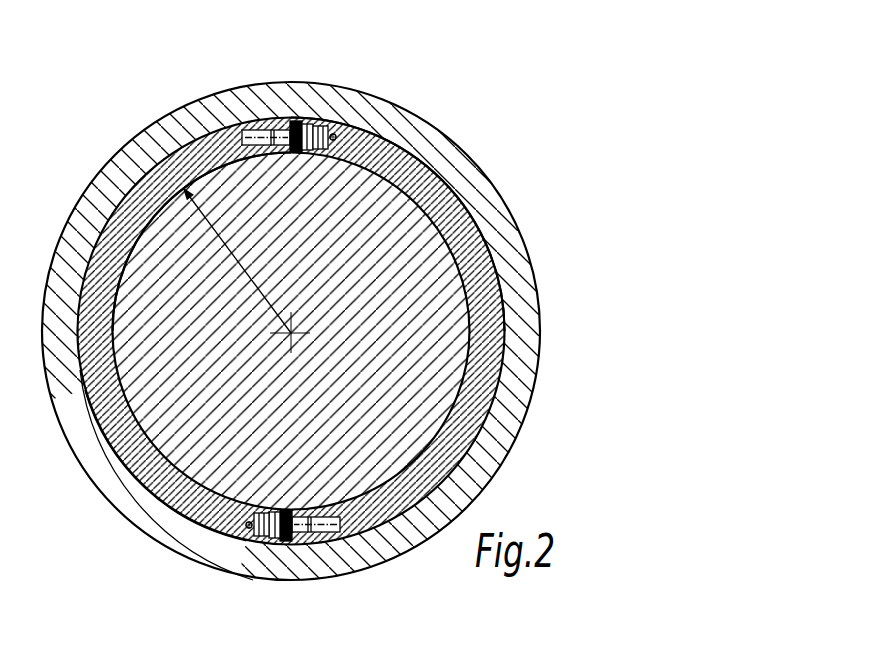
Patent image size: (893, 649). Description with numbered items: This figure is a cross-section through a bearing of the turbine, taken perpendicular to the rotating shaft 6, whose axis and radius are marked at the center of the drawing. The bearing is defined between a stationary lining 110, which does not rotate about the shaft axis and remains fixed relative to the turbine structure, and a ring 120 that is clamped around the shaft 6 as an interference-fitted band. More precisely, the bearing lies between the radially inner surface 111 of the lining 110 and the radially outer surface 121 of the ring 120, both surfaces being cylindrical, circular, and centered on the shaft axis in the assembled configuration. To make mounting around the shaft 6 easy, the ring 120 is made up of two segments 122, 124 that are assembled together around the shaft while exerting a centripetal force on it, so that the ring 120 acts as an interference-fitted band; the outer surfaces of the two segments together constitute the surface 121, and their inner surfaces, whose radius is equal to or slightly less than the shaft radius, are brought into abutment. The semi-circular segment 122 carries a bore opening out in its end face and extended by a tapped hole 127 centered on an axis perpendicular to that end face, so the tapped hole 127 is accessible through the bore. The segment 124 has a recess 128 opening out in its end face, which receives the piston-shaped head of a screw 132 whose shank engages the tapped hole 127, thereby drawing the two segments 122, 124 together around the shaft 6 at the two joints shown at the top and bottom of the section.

The shaft 6 is at (432, 357).
The stationary lining 110 is at (448, 155).
The radially inner surface of the lining 111 is at (140, 470).
The ring 120 is at (503, 10).
The radially outer surface of the ring 121 is at (100, 440).
The segment 122 is at (360, 148).
The segment 124 is at (223, 143).
The tapped hole 127 is at (242, 140).
The recess 128 is at (313, 157).
The screw 132 is at (305, 153).